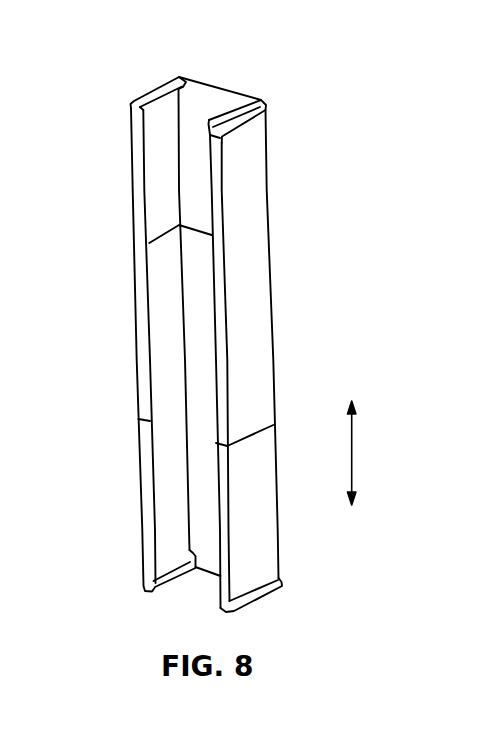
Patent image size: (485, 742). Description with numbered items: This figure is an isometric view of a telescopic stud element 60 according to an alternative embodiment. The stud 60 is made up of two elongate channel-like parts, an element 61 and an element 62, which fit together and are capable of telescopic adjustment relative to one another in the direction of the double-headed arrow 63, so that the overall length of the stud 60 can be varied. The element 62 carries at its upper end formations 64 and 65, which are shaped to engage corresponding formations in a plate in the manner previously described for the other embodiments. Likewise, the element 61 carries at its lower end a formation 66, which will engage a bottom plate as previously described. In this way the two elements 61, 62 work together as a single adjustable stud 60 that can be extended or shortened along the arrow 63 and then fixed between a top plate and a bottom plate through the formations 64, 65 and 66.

The telescopic stud element 60 is at (130, 308).
The element 61 is at (265, 553).
The element 62 is at (300, 361).
The arrow 63 is at (353, 450).
The formation 64 is at (132, 106).
The formation 65 is at (270, 110).
The formation 66 is at (143, 580).